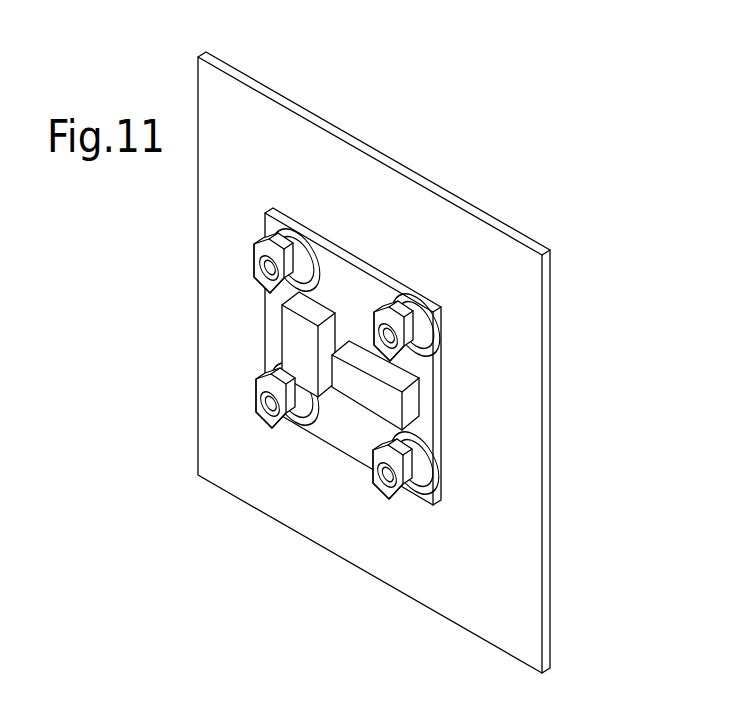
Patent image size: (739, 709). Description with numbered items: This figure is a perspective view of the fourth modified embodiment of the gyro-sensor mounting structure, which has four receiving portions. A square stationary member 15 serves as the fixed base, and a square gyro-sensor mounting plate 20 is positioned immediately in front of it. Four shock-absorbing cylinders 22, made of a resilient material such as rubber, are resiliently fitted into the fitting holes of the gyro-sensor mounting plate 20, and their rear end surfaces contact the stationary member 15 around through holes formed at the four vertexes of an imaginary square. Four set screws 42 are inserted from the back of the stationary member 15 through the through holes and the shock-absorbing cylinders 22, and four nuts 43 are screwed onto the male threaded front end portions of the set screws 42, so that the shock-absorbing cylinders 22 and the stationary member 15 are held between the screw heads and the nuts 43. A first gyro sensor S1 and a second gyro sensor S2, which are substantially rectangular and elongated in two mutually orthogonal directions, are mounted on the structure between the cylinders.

The stationary member 15 is at (531, 353).
The gyro-sensor mounting plate 20 is at (421, 378).
The shock-absorbing cylinder 22 is at (298, 224).
The set screw 42 is at (263, 267).
The nut 43 is at (256, 244).
The first gyro sensor S1 is at (398, 404).
The second gyro sensor S2 is at (293, 333).